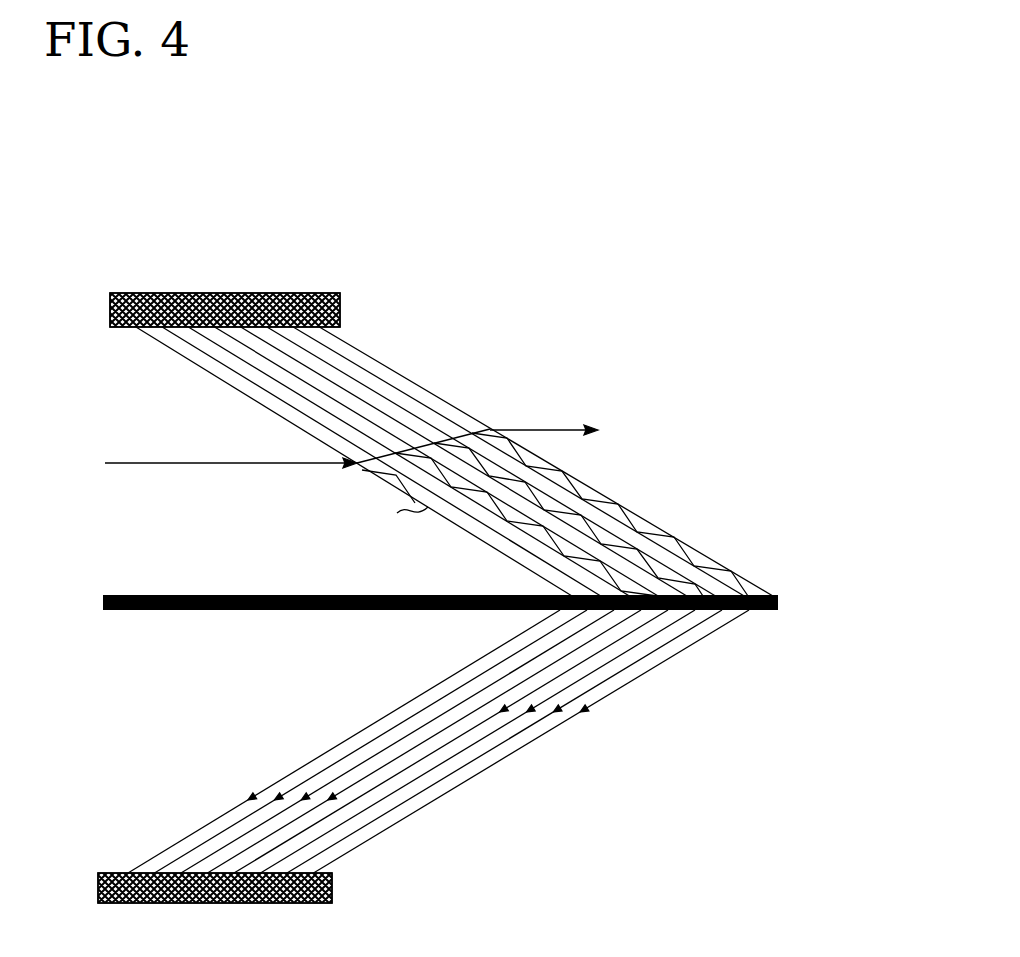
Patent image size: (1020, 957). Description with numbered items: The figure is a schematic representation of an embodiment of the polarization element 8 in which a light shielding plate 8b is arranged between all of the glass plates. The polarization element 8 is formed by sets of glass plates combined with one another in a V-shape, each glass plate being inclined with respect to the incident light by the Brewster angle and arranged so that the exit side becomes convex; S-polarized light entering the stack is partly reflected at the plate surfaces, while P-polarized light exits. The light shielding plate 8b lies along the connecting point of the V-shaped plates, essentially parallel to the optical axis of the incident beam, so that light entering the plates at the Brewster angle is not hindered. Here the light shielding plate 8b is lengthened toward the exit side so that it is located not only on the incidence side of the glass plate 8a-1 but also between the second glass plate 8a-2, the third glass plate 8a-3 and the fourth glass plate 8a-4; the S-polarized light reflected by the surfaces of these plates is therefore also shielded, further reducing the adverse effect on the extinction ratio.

The polarization element 8 is at (471, 378).
The glass plate 8a-1 is at (295, 785).
The second glass plate 8a-2 is at (377, 768).
The third glass plate 8a-3 is at (462, 747).
The fourth glass plate 8a-4 is at (603, 693).
The light shielding plate 8b is at (440, 629).